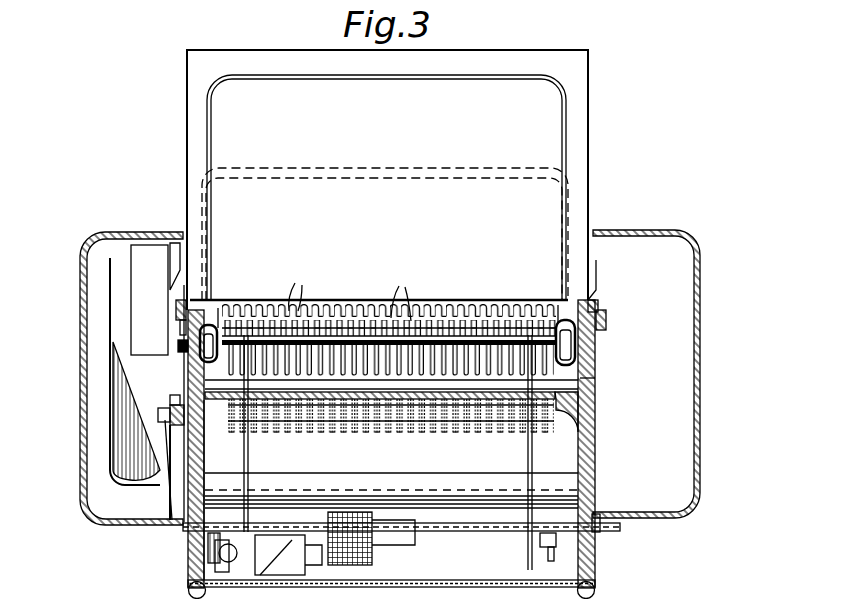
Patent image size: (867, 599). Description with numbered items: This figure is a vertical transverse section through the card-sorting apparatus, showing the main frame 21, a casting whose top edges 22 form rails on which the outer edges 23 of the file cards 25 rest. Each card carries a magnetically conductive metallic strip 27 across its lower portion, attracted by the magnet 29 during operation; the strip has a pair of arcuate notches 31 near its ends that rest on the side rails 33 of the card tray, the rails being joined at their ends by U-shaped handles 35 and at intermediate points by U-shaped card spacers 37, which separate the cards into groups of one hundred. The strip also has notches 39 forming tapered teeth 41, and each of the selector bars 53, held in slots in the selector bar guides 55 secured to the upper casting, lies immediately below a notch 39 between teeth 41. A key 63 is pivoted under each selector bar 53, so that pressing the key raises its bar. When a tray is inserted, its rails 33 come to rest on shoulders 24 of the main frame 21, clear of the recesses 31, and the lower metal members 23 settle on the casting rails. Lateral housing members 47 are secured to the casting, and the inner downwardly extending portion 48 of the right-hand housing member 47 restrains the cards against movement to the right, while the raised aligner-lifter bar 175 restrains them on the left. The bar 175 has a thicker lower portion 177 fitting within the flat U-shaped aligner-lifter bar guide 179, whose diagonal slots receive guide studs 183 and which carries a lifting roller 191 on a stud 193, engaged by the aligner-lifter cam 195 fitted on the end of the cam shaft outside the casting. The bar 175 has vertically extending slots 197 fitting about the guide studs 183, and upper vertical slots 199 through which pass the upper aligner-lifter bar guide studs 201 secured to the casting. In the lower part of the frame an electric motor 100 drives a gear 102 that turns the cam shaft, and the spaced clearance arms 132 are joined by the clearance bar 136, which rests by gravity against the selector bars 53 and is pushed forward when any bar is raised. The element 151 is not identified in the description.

The main frame 21 is at (596, 432).
The top edges 22 is at (178, 330).
The outer edges 23 is at (598, 300).
The shoulders 24 is at (597, 378).
The file cards 25 is at (588, 127).
The metallic strip 27 is at (450, 300).
The magnet 29 is at (163, 261).
The arcuate notches 31 is at (222, 325).
The side rails 33 is at (222, 333).
The U-shaped handles 35 is at (345, 166).
The U-shaped card spacers 37 is at (550, 80).
The notches 39 is at (322, 318).
The teeth 41 is at (298, 287).
The lateral housing members 47 is at (84, 291).
The inner downwardly extending portion 48 is at (597, 290).
The selector bars 53 is at (401, 294).
The selector bar guides 55 is at (585, 397).
The key 63 is at (357, 434).
The electric motor 100 is at (284, 565).
The gear 102 is at (190, 562).
The clearance arms 132 is at (250, 453).
The clearance bar 136 is at (337, 342).
The guard plate 151 is at (116, 240).
The aligner-lifter bar 175 is at (185, 300).
The thicker, lower portion 177 is at (185, 368).
The aligner-lifter bar guide 179 is at (172, 383).
The guide studs 183 is at (170, 428).
The lifting roller 191 is at (165, 440).
The stud 193 is at (165, 412).
The aligner-lifter cam 195 is at (180, 520).
The vertically extending slots 197 is at (221, 490).
The vertical slots 199 is at (189, 320).
The upper aligner-lifter bar guide studs 201 is at (178, 346).